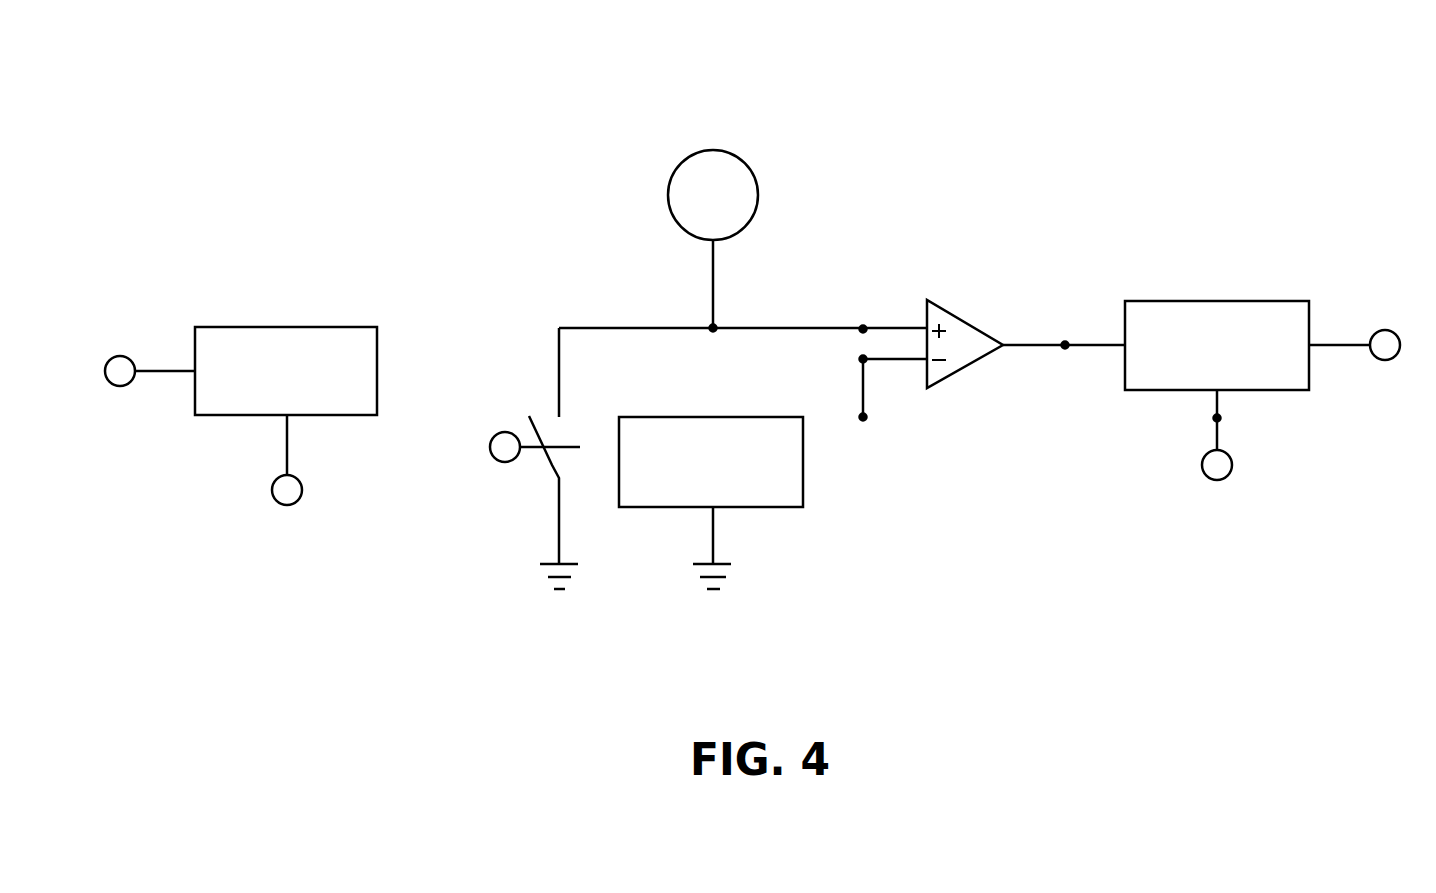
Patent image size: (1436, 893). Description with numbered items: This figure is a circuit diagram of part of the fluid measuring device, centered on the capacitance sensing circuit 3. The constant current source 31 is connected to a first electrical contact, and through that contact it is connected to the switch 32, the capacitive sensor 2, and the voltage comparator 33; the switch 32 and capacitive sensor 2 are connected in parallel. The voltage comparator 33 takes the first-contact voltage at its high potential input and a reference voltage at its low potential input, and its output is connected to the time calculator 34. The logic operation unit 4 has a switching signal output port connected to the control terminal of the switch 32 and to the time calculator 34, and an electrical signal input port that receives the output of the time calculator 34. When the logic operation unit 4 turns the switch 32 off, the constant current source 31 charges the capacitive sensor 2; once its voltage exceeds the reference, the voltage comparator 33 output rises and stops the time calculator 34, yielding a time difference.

The capacitive sensor 2 is at (768, 516).
The capacitance sensing circuit 3 is at (1088, 180).
The logic operation unit 4 is at (291, 318).
The constant current source 31 is at (738, 153).
The switch 32 is at (548, 463).
The voltage comparator 33 is at (967, 323).
The time calculator 34 is at (1217, 301).